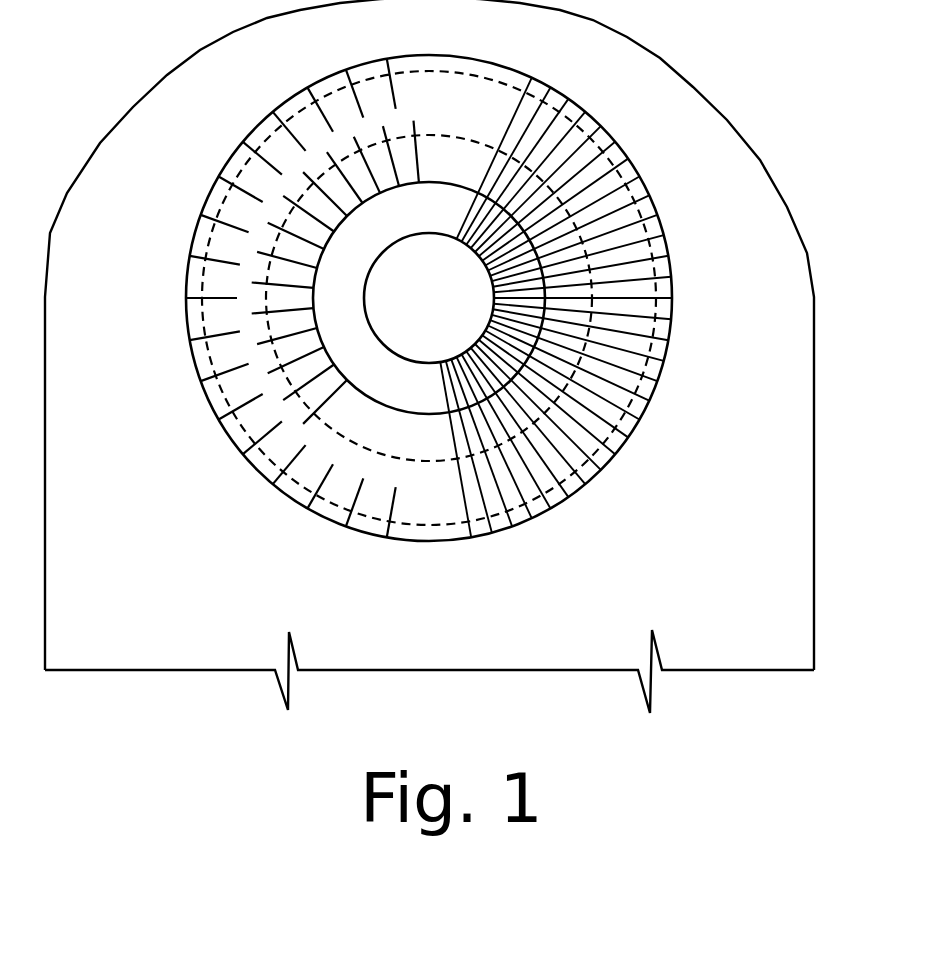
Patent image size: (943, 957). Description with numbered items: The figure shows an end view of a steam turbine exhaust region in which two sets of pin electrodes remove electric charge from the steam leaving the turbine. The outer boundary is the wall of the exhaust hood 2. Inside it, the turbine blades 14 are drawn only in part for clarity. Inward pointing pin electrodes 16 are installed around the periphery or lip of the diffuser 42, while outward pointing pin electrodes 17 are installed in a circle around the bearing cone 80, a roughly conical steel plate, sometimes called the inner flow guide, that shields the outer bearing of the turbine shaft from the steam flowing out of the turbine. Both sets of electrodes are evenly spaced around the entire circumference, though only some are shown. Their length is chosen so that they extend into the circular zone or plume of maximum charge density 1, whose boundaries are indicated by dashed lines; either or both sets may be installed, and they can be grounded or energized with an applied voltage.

The zone of maximum charge density 1 is at (433, 90).
The wall of the exhaust hood 2 is at (46, 487).
The turbine blades 14 is at (657, 375).
The pin electrodes 16 is at (245, 403).
The pin electrodes 17 is at (280, 280).
The diffuser 42 is at (420, 541).
The bearing cone 80 is at (378, 402).